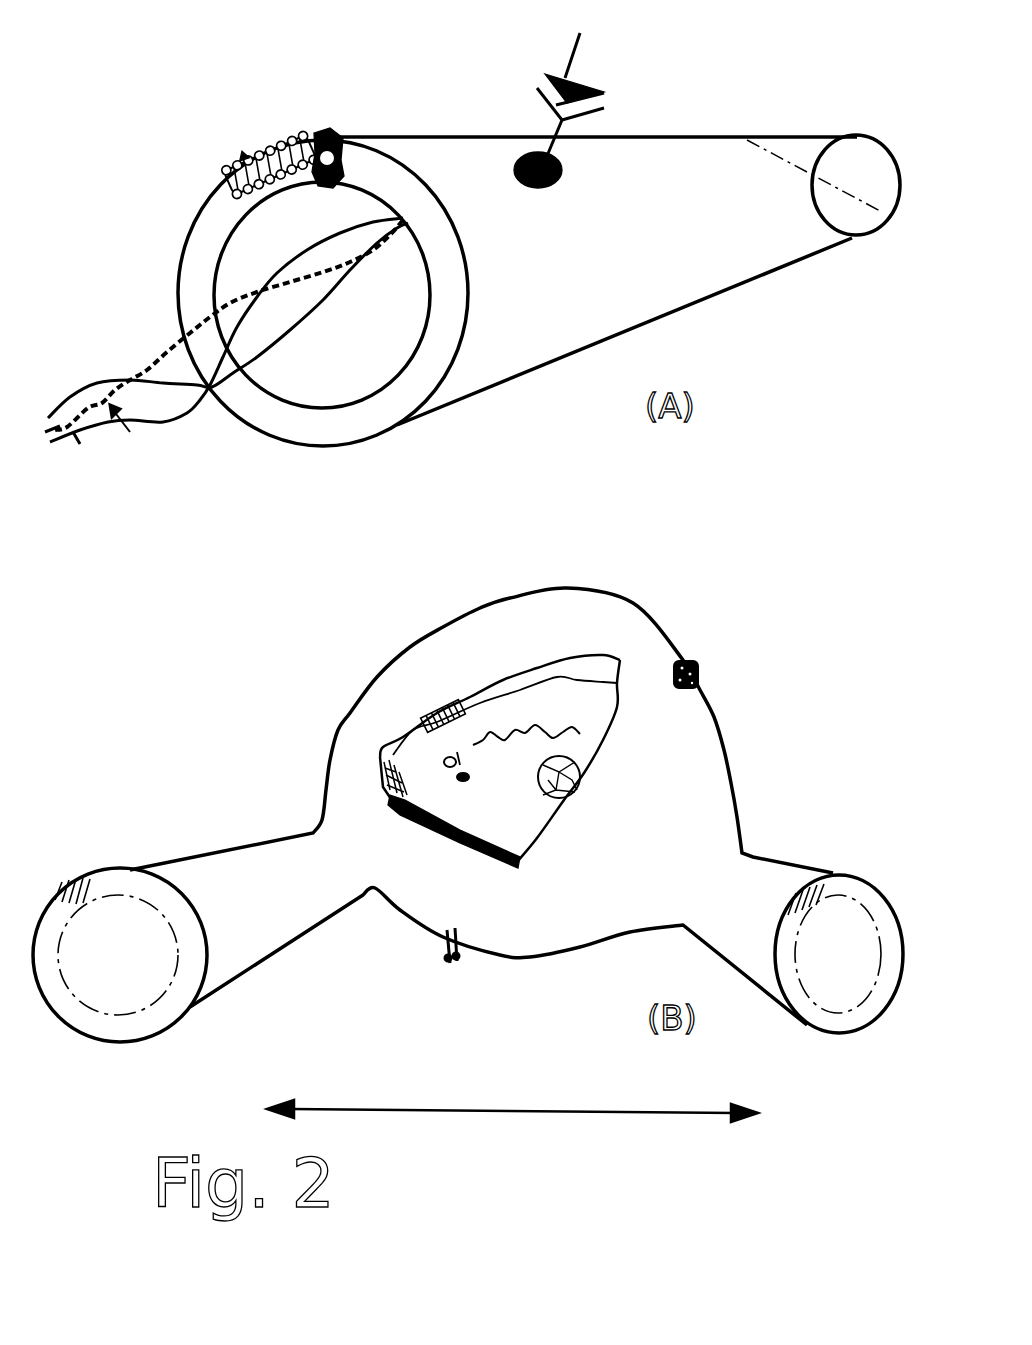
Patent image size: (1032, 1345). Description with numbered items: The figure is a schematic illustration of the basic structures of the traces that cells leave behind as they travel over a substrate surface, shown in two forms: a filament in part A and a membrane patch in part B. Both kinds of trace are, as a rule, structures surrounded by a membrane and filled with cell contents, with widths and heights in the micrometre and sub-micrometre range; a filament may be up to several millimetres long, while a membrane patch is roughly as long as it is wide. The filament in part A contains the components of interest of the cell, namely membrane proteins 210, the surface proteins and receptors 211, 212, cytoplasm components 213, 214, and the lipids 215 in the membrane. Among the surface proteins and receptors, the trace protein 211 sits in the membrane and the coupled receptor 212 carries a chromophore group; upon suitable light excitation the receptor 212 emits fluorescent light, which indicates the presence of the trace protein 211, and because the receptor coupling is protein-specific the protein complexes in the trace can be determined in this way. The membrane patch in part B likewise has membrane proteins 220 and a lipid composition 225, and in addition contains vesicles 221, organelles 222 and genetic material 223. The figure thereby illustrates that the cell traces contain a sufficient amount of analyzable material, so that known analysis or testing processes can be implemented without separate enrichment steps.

The membrane proteins 210 is at (335, 122).
The trace protein 211 is at (570, 123).
The coupled receptor 212 is at (583, 45).
The cytoplasm components 213 is at (95, 443).
The cytoplasm components 214 is at (390, 353).
The lipids 215 is at (233, 167).
The membrane proteins 220 is at (700, 660).
The vesicles 221 is at (588, 773).
The organelles 222 is at (442, 760).
The genetic material 223 is at (533, 727).
The lipid composition 225 is at (453, 963).